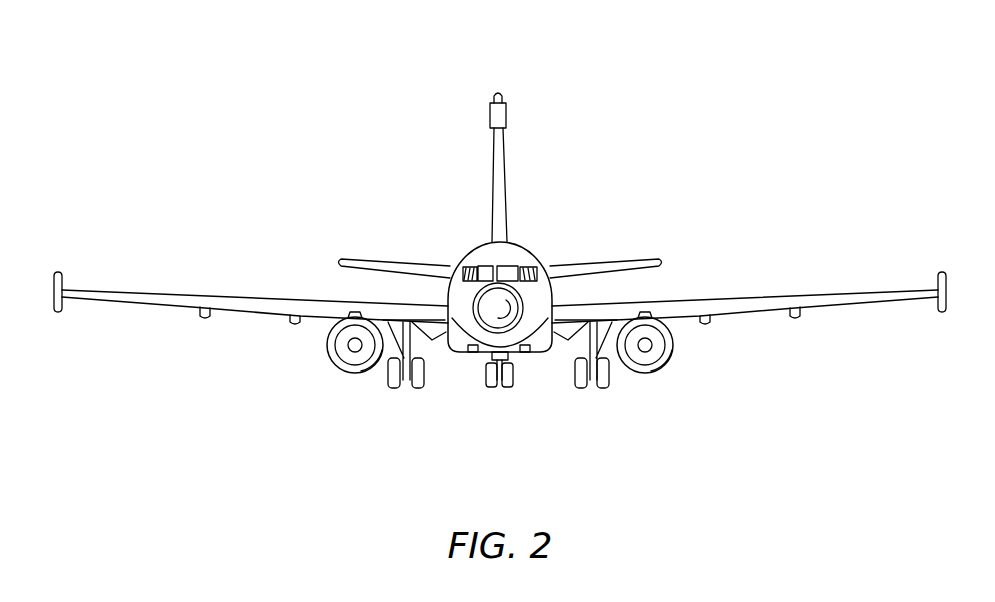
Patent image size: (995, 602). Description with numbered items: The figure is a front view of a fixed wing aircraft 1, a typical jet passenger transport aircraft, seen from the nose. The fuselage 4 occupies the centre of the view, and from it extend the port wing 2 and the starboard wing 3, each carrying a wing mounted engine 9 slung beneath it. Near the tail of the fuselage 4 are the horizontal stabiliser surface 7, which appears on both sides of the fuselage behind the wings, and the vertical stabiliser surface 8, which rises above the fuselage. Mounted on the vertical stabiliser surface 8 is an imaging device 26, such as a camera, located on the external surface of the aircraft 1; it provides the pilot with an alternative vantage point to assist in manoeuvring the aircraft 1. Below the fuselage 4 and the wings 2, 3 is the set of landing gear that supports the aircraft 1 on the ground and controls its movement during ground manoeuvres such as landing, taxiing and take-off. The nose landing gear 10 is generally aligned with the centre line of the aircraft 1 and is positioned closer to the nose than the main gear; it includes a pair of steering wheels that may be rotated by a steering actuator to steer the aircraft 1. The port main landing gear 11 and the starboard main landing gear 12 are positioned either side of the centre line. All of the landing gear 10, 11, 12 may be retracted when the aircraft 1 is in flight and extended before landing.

The fixed wing aircraft 1 is at (285, 124).
The port wing 2 is at (833, 293).
The starboard wing 3 is at (212, 300).
The fuselage 4 is at (518, 257).
The horizontal stabiliser surface 7 is at (411, 272).
The vertical stabiliser surface 8 is at (497, 190).
The wing mounted engine 9 is at (355, 360).
The nose landing gear 10 is at (507, 383).
The port main landing gear 11 is at (608, 383).
The starboard main landing gear 12 is at (418, 382).
The imaging device 26 is at (494, 110).